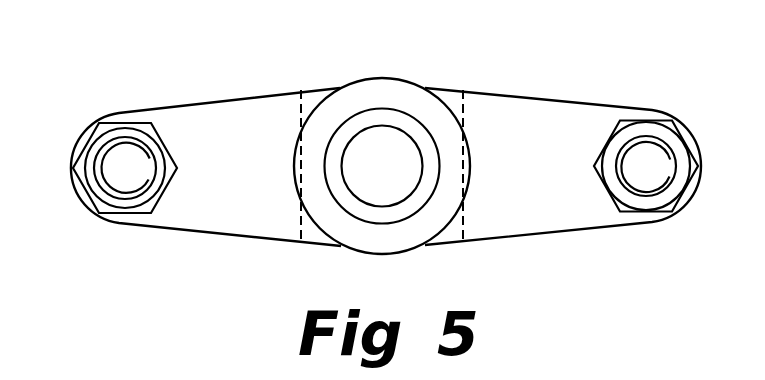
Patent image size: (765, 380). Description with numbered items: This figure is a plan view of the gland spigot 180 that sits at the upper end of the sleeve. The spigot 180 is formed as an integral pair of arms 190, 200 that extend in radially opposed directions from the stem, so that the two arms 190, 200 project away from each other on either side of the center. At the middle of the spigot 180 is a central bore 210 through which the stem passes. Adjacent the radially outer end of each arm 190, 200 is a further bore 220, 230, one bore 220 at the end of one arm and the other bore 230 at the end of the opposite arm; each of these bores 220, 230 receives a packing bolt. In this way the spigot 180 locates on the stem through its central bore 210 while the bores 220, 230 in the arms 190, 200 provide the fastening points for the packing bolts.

The gland spigot 180 is at (512, 85).
The arm 190 is at (542, 217).
The arm 200 is at (262, 217).
The central bore 210 is at (382, 148).
The bore 220 is at (643, 153).
The bore 230 is at (115, 180).